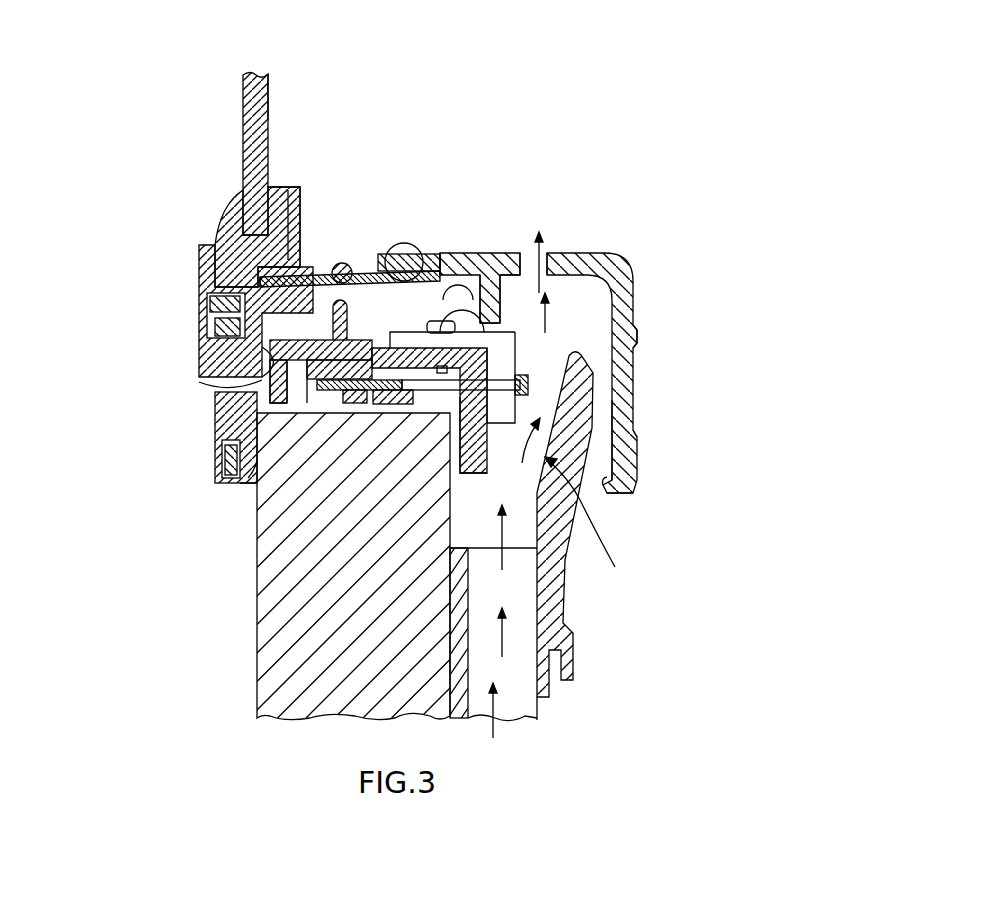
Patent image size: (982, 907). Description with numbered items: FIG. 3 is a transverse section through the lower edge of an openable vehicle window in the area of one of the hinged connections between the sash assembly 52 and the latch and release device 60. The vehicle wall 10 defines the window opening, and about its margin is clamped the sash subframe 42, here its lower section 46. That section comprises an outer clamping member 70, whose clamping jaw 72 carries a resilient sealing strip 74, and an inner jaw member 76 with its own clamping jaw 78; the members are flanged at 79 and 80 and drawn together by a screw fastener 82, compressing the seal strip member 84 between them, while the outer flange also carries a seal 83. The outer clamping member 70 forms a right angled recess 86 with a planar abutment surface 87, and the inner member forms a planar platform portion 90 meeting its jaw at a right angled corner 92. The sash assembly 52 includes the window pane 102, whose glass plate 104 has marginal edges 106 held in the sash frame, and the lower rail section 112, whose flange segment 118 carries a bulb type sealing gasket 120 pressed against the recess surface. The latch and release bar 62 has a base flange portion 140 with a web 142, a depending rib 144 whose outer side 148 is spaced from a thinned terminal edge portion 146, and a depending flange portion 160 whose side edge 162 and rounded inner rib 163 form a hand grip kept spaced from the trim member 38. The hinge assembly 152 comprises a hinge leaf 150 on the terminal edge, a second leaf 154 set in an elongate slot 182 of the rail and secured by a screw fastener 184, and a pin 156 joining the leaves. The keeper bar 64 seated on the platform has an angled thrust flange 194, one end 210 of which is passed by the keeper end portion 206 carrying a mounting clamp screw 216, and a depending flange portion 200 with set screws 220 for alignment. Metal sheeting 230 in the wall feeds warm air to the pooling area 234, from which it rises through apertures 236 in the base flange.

The vehicle wall 10 is at (256, 650).
The trim member 38 is at (563, 588).
The sash subframe 42 is at (157, 491).
The lower section 46 is at (208, 449).
The sash assembly 52 is at (209, 211).
The latch and release device 60 is at (593, 321).
The latch and release bar 62 is at (604, 253).
The keeper bar 64 is at (523, 352).
The outer clamping member 70 is at (215, 412).
The clamping jaw 72 is at (222, 430).
The resilient sealing strip 74 is at (248, 492).
The inner jaw member 76 is at (477, 430).
The clamping jaw 78 is at (500, 578).
The flange 79 is at (357, 403).
The flange 80 is at (455, 365).
The screw fastener 82 is at (485, 362).
The seal 83 is at (340, 360).
The seal strip member 84 is at (372, 340).
The right angled recess 86 is at (262, 380).
The planar abutment surface 87 is at (285, 397).
The planar platform portion 90 is at (491, 283).
The right angled corner 92 is at (500, 332).
The window pane 102 is at (272, 101).
The plate 104 is at (269, 96).
The marginal edges 106 is at (245, 190).
The lower rail section 112 is at (199, 298).
The flange segment 118 is at (208, 342).
The bulb type sealing gasket 120 is at (212, 377).
The base flange portion 140 is at (487, 307).
The web 142 is at (481, 317).
The depending rib 144 is at (503, 270).
The terminal edge portion 146 is at (420, 250).
The side of rib 148 is at (477, 280).
The hinge leaf 150 is at (366, 258).
The hinge assembly 152 is at (358, 234).
The hinge leaf 154 is at (318, 270).
The pin 156 is at (342, 262).
The depending flange portion 160 is at (627, 447).
The depending side edge 162 is at (632, 489).
The rounded inner rib 163 is at (607, 483).
The elongate slot 182 is at (303, 268).
The screw fastener 184 is at (302, 362).
The thrust flange 194 is at (440, 270).
The depending flange portion 200 is at (508, 403).
The end portion 206 is at (436, 368).
The end of thrust flange 210 is at (466, 255).
The mounting clamp screw 216 is at (447, 432).
The set screw 220 is at (530, 383).
The metal sheeting 230 is at (449, 666).
The warm air pooling area 234 is at (594, 521).
The apertures 236 is at (531, 257).